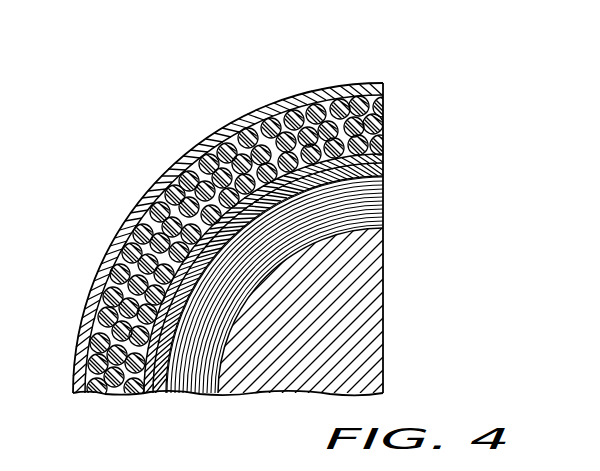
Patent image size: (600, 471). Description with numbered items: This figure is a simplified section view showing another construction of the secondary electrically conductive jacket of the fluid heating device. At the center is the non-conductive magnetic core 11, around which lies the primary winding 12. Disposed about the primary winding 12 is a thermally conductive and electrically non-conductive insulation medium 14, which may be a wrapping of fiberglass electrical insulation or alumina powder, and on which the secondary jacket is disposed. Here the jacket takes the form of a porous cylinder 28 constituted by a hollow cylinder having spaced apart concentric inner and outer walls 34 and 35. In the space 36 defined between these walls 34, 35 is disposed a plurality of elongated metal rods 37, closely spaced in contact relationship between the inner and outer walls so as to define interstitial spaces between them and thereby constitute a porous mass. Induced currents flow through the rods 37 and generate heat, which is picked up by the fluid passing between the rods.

The porous cylinder 28 is at (273, 98).
The outer wall 35 is at (193, 152).
The space 36 is at (128, 234).
The elongated metal rods 37 is at (383, 111).
The inner wall 34 is at (382, 152).
The insulation medium 14 is at (167, 372).
The primary winding 12 is at (367, 202).
The magnetic core 11 is at (360, 285).